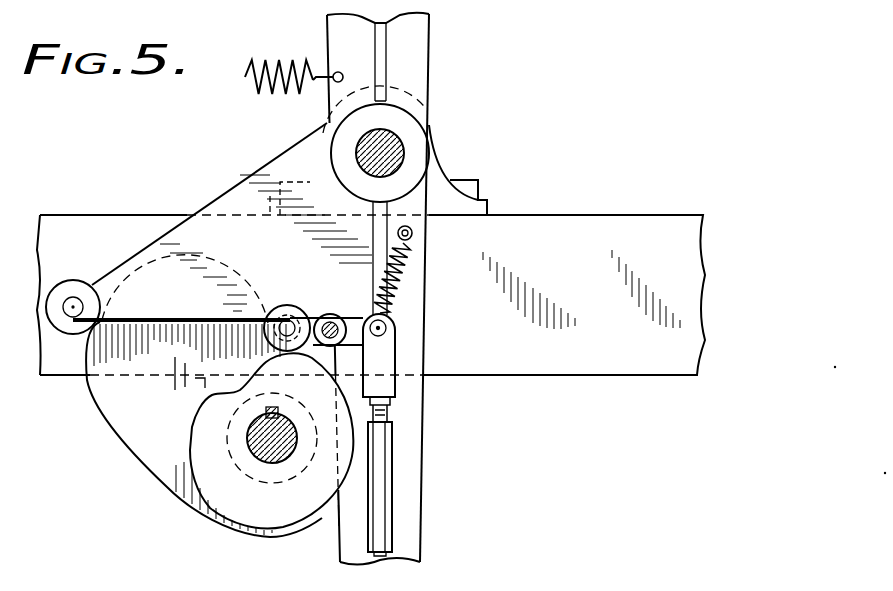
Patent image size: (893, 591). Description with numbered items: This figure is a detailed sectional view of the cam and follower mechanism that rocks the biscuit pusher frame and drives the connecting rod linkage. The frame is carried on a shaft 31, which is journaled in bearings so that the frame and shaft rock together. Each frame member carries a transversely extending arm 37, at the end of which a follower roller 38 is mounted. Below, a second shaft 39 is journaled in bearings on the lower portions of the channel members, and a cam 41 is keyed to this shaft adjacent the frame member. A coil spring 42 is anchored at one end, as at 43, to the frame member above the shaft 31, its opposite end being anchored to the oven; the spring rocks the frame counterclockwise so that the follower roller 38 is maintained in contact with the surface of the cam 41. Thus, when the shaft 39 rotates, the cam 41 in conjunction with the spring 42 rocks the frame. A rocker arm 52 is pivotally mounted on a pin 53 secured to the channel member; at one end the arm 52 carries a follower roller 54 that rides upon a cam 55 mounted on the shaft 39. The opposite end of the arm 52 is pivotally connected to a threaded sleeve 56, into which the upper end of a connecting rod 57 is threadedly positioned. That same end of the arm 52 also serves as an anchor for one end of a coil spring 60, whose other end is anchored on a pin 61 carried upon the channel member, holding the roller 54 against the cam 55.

The shaft 31 is at (398, 148).
The arm 37 is at (222, 200).
The follower roller 38 is at (73, 280).
The shaft 39 is at (253, 457).
The cam 41 is at (97, 417).
The coil spring 42 is at (280, 60).
The anchor 43 is at (339, 72).
The rocker arm 52 is at (346, 315).
The pin 53 is at (323, 318).
The follower roller 54 is at (275, 304).
The cam 55 is at (352, 447).
The threaded sleeve 56 is at (396, 357).
The connecting rod 57 is at (390, 480).
The coil spring 60 is at (398, 288).
The pin 61 is at (412, 233).